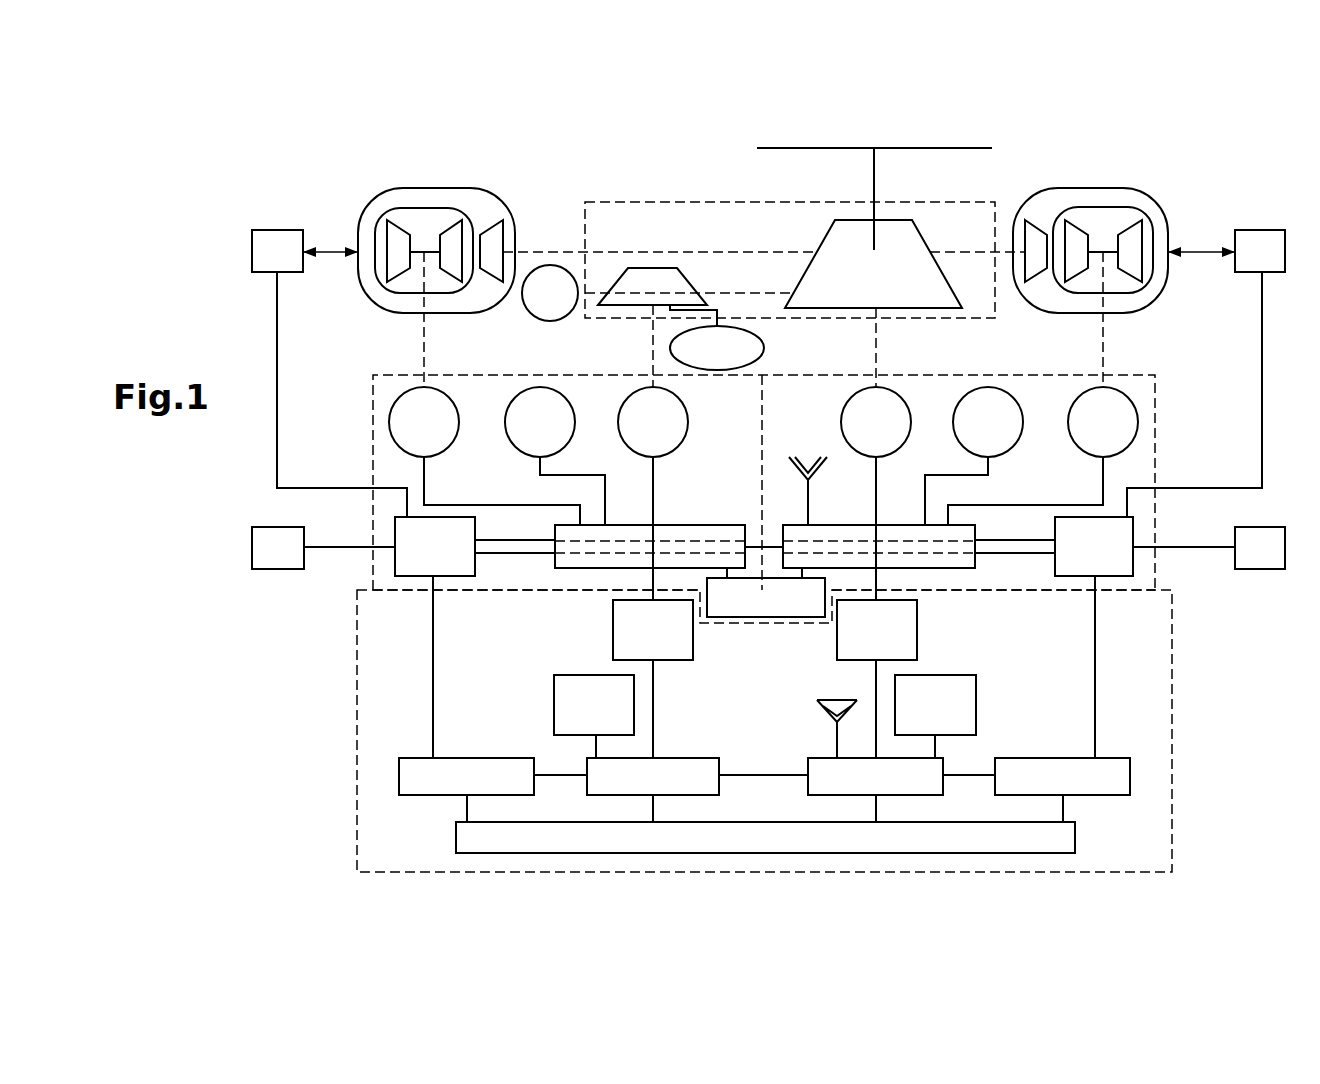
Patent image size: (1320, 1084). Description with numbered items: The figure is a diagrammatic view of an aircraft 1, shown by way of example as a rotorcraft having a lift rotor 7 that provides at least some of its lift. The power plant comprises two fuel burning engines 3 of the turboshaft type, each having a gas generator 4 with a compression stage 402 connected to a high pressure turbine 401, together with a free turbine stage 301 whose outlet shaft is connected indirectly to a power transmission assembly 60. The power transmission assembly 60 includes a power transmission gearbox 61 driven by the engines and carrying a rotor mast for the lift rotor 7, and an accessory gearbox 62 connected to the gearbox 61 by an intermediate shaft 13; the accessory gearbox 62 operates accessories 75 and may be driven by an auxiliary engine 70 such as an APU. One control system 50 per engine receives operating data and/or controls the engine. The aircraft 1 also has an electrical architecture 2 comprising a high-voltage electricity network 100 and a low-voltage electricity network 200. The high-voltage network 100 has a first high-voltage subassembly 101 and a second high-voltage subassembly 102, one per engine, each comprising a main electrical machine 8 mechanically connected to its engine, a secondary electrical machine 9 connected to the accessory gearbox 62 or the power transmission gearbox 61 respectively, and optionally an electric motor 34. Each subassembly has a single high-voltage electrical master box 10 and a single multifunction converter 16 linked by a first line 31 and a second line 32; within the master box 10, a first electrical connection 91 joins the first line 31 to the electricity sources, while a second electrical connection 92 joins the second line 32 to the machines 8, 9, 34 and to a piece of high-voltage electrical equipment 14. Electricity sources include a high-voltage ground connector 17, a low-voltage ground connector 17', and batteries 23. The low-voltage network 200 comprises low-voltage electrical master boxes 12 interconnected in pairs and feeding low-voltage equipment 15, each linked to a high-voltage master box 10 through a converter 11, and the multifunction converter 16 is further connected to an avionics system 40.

The aircraft 1 is at (270, 822).
The electrical architecture 2 is at (335, 858).
The fuel burning engine 3 is at (400, 188).
The gas generator 4 is at (450, 230).
The lift rotor 7 is at (1008, 158).
The main electrical machine 8 is at (416, 436).
The secondary electrical machine 9 is at (645, 436).
The high-voltage electrical master box 10 is at (710, 525).
The converter 11 is at (639, 644).
The low-voltage electrical master box 12 is at (453, 791).
The intermediate shaft 13 is at (737, 293).
The piece of electrical equipment 14 is at (752, 612).
The low-voltage equipment 15 is at (751, 851).
The multifunction converter 16 is at (421, 562).
The high-voltage ground connector 17 is at (808, 475).
The low-voltage ground connector 17' is at (839, 715).
The battery 23 is at (580, 719).
The first line 31 is at (495, 555).
The second line 32 is at (510, 537).
The electric motor 34 is at (526, 436).
The avionics system 40 is at (264, 562).
The control system 50 is at (263, 266).
The power transmission assembly 60 is at (977, 320).
The power transmission gearbox 61 is at (860, 280).
The accessory gearbox 62 is at (639, 301).
The auxiliary engine 70 is at (536, 307).
The accessories 75 is at (703, 362).
The first electrical connection 91 is at (615, 553).
The second electrical connection 92 is at (625, 540).
The high-voltage electricity network 100 is at (373, 397).
The first high-voltage subassembly 101 is at (612, 375).
The second high-voltage subassembly 102 is at (972, 375).
The low-voltage electricity network 200 is at (358, 655).
The free turbine stage 301 is at (495, 238).
The high pressure turbine 401 is at (450, 237).
The compression stage 402 is at (395, 233).